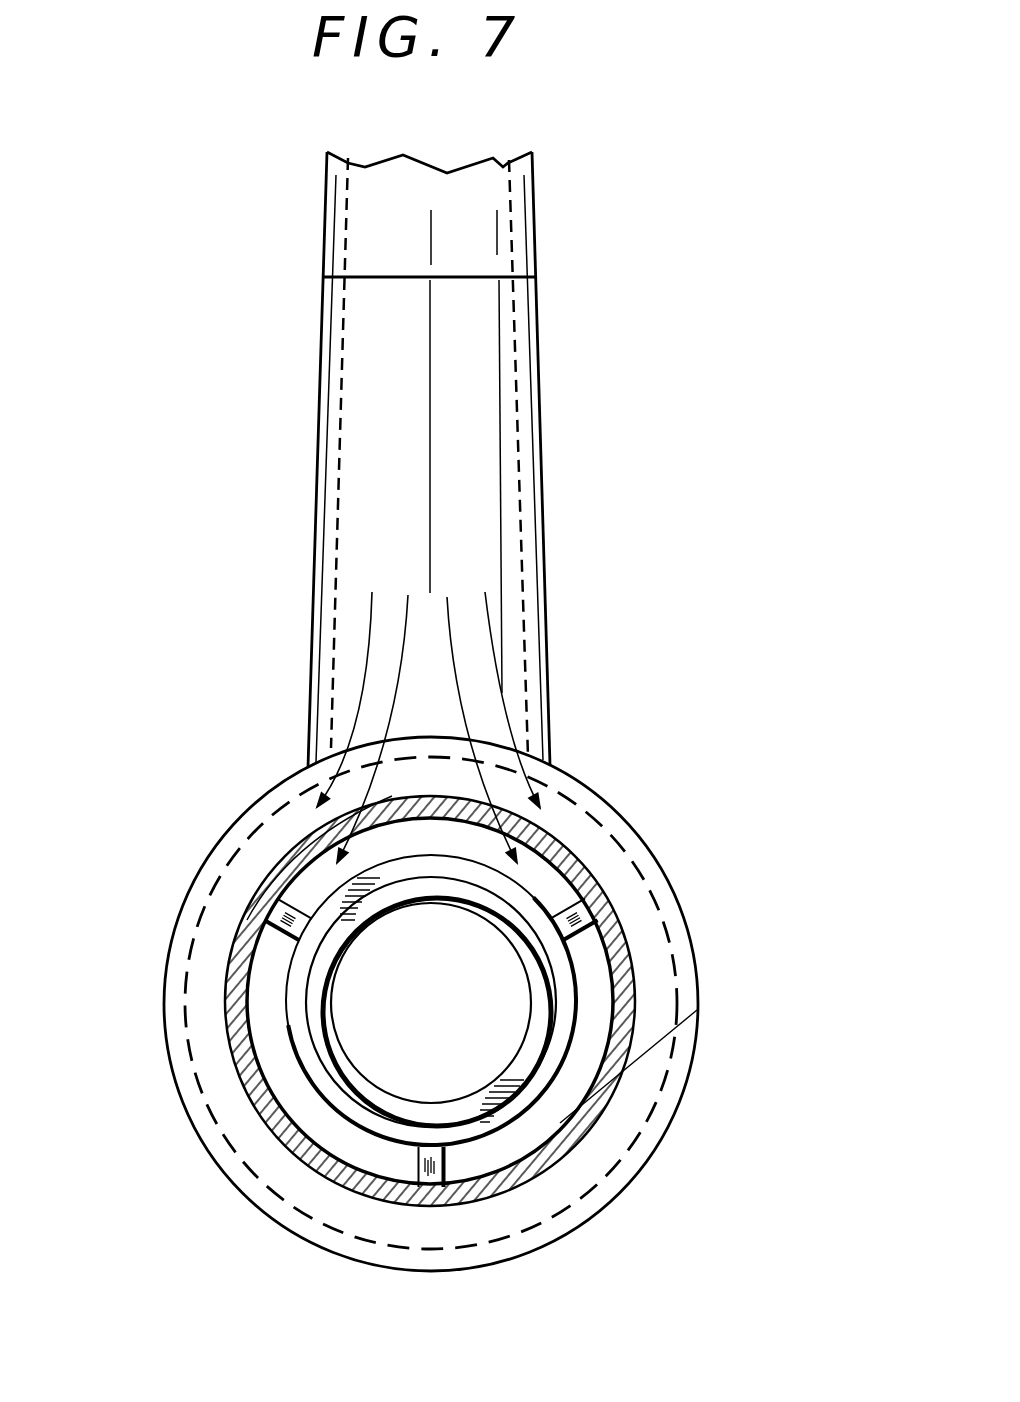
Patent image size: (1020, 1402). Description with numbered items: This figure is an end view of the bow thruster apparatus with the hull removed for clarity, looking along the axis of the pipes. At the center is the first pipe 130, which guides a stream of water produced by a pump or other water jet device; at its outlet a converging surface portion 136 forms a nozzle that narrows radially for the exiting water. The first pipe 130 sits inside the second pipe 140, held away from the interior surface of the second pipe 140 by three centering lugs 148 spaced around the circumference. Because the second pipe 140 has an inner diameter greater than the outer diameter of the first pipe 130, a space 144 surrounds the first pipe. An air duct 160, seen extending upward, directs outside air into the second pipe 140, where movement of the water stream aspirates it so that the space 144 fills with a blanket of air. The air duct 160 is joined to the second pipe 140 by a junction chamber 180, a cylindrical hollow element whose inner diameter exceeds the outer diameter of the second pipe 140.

The air duct 160 is at (550, 487).
The junction chamber 180 is at (182, 1082).
The second pipe 140 is at (633, 1022).
The space 144 is at (531, 1139).
The first pipe 130 is at (557, 1083).
The converging surface portion 136 is at (525, 1060).
The centering lugs 148 is at (278, 928).